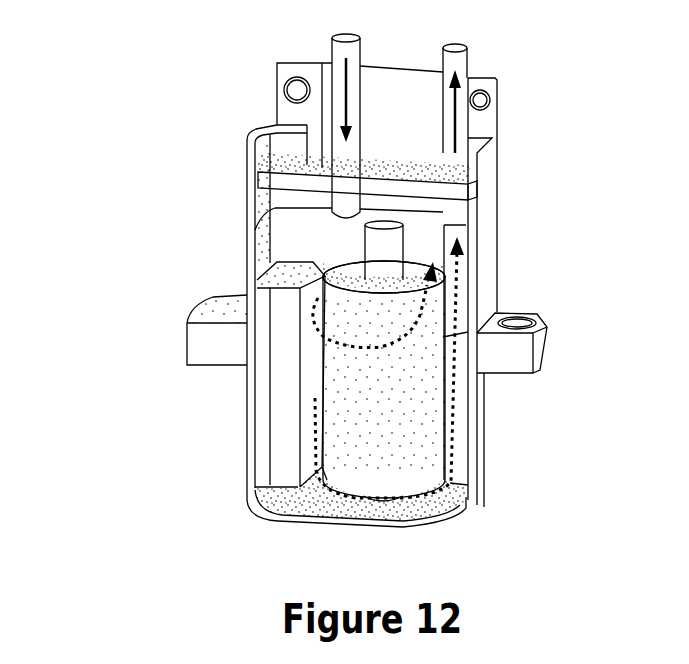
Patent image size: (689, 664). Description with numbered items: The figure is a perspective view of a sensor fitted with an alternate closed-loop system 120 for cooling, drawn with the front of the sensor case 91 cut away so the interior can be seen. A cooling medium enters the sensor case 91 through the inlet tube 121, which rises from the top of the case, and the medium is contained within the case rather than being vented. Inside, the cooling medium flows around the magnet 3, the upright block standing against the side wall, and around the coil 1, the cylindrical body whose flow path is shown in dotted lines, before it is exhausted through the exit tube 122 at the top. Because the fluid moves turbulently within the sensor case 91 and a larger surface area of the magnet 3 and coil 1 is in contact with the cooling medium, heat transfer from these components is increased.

The closed-loop system 120 is at (108, 252).
The inlet tube 121 is at (326, 43).
The exit tube 122 is at (480, 50).
The magnet 3 is at (272, 426).
The coil 1 is at (440, 438).
The sensor case 91 is at (520, 355).